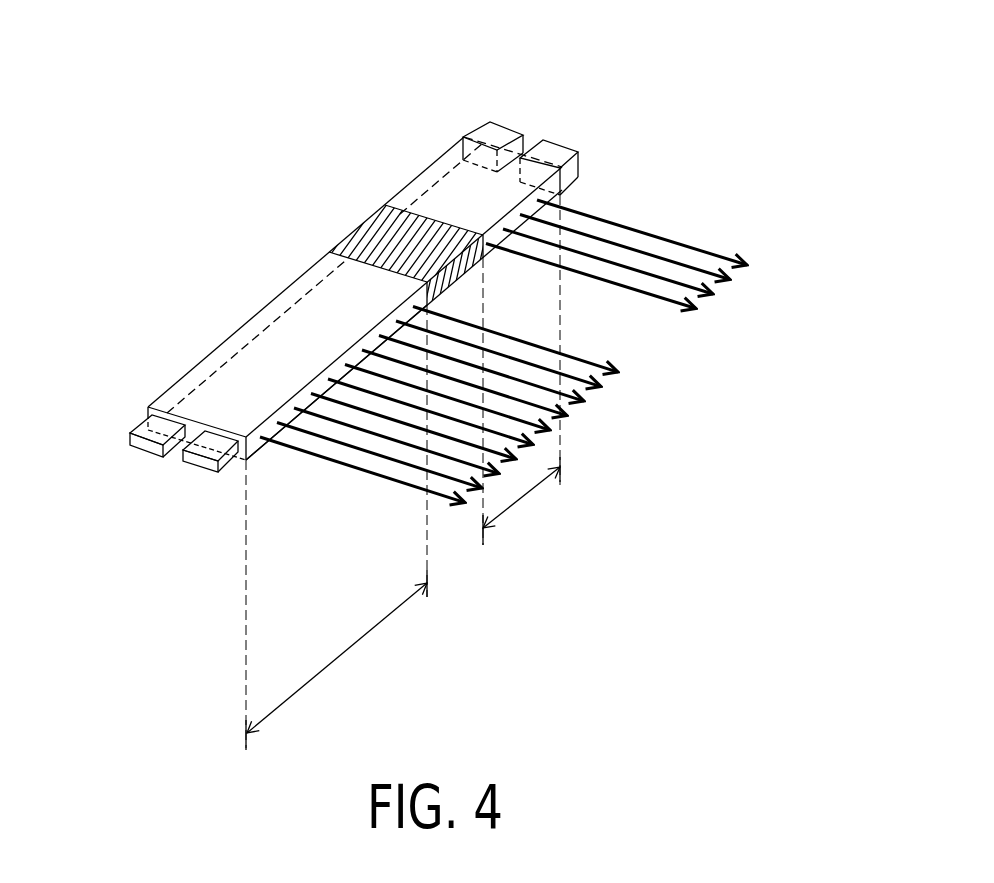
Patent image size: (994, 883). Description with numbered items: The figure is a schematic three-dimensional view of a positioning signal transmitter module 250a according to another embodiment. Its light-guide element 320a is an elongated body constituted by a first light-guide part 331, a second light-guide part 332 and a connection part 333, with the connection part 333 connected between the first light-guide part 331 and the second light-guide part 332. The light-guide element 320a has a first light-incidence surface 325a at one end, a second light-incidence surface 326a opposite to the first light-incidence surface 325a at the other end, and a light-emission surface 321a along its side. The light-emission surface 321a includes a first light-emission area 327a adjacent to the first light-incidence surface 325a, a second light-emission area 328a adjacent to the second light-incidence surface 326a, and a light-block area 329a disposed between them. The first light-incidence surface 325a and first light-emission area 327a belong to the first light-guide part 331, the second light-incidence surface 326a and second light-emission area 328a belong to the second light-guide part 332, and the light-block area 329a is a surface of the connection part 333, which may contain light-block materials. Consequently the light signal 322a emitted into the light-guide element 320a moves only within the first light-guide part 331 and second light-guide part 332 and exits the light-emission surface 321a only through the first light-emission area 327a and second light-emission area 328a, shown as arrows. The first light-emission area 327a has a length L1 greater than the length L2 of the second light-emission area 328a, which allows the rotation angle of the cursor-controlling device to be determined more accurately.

The positioning signal transmitter module 250a is at (168, 280).
The light-guide element 320a is at (415, 93).
The first light-guide part 331 is at (300, 313).
The connection part 333 is at (362, 237).
The second light-guide part 332 is at (430, 180).
The light-emission surface 321a is at (738, 30).
The first light-emission area 327a is at (466, 252).
The light-block area 329a is at (403, 310).
The second light-emission area 328a is at (562, 167).
The second light-incidence surface 326a is at (468, 133).
The first light-incidence surface 325a is at (198, 428).
The light signal 322a is at (662, 302).
The length of the first light-emission area L1 is at (336, 527).
The length of the second light-emission area L2 is at (524, 370).